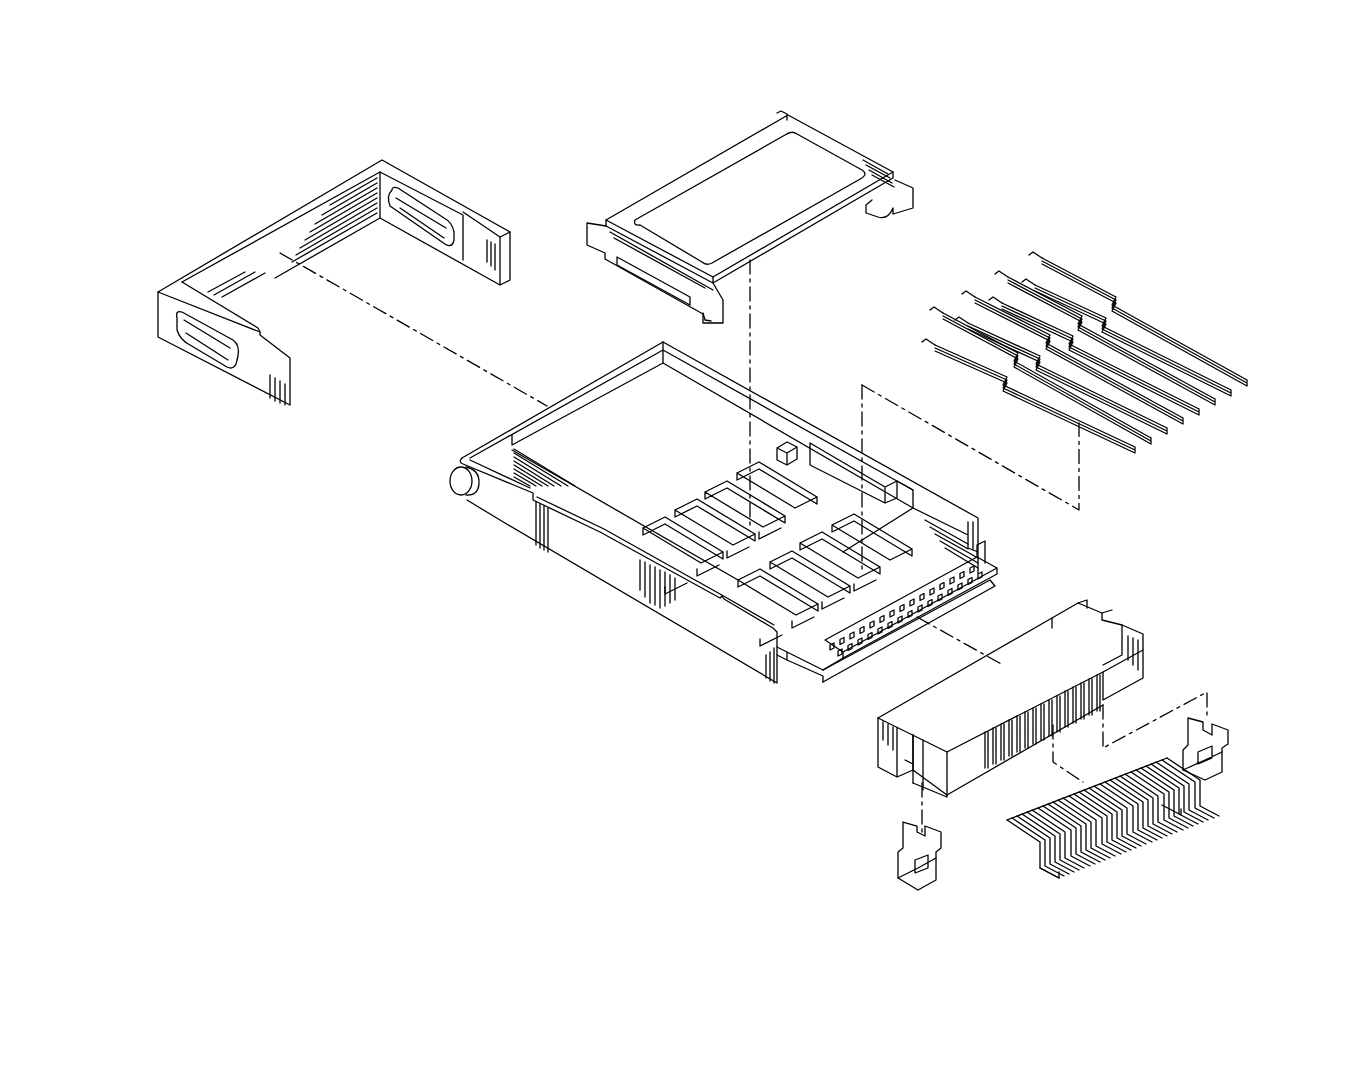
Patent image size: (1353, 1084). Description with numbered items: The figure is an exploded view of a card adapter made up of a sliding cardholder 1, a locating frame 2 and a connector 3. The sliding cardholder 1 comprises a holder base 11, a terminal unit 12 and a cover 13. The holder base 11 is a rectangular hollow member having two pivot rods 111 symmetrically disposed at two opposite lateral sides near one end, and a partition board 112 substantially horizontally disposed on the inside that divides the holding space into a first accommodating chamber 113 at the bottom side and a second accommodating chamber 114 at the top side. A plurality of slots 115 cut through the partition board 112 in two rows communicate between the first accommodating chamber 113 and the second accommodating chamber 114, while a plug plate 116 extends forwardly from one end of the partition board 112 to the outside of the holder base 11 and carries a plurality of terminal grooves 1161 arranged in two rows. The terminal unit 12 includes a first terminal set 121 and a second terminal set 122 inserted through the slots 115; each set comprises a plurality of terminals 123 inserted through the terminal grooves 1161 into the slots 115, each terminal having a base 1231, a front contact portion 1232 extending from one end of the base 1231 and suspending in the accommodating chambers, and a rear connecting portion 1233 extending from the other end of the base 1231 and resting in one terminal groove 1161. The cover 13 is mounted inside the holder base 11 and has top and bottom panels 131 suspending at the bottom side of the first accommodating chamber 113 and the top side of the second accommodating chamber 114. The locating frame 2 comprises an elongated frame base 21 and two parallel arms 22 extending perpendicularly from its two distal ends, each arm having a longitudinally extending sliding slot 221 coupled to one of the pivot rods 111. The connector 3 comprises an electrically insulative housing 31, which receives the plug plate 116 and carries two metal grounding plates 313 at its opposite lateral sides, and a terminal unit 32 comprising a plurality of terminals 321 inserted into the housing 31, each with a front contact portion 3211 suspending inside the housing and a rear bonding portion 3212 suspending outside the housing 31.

The sliding cardholder 1 is at (978, 172).
The holder base 11 is at (645, 633).
The pivot rods 111 is at (465, 487).
The partition board 112 is at (605, 493).
The first accommodating chamber 113 is at (795, 695).
The second accommodating chamber 114 is at (612, 412).
The slots 115 is at (775, 488).
The plug plate 116 is at (960, 607).
The terminal grooves 1161 is at (992, 562).
The terminal unit 12 is at (1205, 300).
The first terminal set 121 is at (952, 357).
The second terminal set 122 is at (1055, 253).
The terminals 123 is at (1120, 300).
The base 1231 is at (1190, 350).
The front contact portion 1232 is at (1063, 283).
The rear connecting portion 1233 is at (1245, 378).
The cover 13 is at (857, 143).
The top and bottom panels 131 is at (705, 170).
The locating frame 2 is at (455, 165).
The elongated frame base 21 is at (303, 230).
The arms 22 is at (268, 385).
The sliding slot 221 is at (208, 348).
The connector 3 is at (1148, 610).
The housing 31 is at (1140, 668).
The metal grounding plates 313 is at (925, 890).
The terminal unit 32 is at (1180, 843).
The terminals 321 is at (1050, 850).
The front contact portion 3211 is at (1012, 828).
The rear bonding portion 3212 is at (1065, 868).